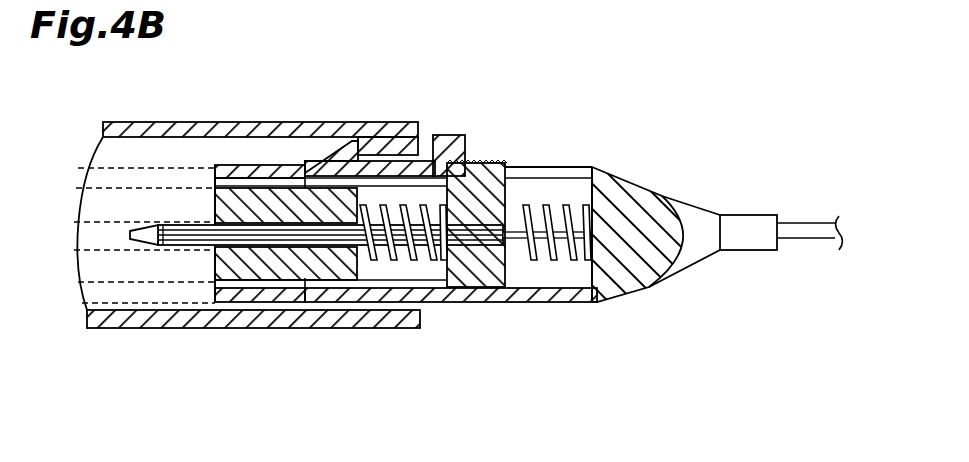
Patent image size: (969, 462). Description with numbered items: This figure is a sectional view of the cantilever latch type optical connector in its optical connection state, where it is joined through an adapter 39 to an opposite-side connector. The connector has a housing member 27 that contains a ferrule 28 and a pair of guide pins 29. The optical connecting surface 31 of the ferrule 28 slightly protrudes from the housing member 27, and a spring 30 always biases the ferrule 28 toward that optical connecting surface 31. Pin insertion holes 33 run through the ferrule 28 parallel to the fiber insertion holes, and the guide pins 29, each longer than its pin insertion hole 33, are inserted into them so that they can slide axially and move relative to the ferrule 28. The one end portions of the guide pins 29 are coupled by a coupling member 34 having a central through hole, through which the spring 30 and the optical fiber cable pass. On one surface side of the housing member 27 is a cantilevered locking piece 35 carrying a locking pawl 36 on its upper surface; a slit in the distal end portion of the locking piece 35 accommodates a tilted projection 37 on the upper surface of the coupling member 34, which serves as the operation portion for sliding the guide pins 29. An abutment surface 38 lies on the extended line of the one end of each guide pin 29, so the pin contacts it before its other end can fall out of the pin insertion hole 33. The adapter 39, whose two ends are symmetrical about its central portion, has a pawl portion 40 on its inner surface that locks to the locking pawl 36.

The housing member 27 is at (428, 300).
The ferrule 28 is at (263, 268).
The guide pin 29 is at (367, 237).
The spring 30 is at (560, 262).
The optical connecting surface 31 is at (216, 203).
The pin insertion hole 33 is at (312, 262).
The coupling member 34 is at (486, 292).
The locking piece 35 is at (428, 165).
The locking pawl 36 is at (350, 152).
The tilted projection 37 is at (495, 172).
The abutment surface 38 is at (600, 297).
The adapter 39 is at (172, 330).
The pawl portion 40 is at (364, 160).